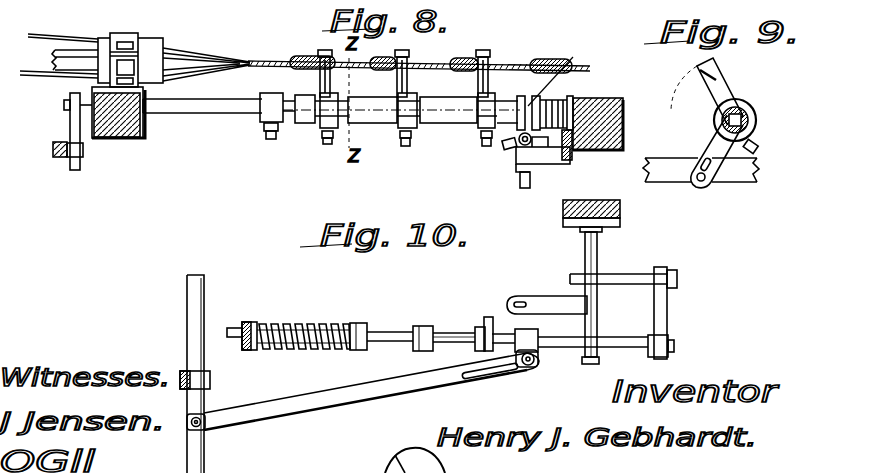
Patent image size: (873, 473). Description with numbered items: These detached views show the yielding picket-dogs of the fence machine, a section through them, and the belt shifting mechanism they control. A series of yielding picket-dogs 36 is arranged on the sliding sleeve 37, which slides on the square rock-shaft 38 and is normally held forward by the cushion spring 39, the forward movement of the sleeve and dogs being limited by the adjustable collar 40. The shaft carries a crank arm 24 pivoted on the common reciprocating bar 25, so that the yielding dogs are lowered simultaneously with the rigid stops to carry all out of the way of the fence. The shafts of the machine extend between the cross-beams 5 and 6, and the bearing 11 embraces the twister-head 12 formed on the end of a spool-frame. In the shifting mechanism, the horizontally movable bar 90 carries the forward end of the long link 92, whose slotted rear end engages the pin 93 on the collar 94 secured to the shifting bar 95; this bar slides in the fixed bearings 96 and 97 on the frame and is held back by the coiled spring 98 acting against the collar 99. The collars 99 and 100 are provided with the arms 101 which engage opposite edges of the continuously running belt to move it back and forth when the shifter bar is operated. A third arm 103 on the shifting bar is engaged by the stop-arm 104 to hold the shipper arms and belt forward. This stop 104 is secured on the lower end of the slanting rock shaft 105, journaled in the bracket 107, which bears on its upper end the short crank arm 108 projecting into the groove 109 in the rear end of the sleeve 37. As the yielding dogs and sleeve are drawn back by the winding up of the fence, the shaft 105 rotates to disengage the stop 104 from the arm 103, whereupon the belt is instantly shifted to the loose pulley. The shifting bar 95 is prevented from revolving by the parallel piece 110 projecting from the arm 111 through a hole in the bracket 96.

In FIG. 8, the cross-beam 5 is at (117, 140).
In FIG. 8, the cross-beam 6 is at (620, 151).
In FIG. 8, the bearing 11 is at (124, 34).
In FIG. 8, the twister-head 12 is at (152, 42).
In FIG. 8, the crank arm 24 is at (70, 122).
In FIG. 9, the crank arm 24 is at (722, 147).
In FIG. 8, the reciprocating bar 25 is at (53, 157).
In FIG. 8, the yielding picket-dog 36 is at (468, 60).
In FIG. 8, the sliding sleeve 37 is at (458, 124).
In FIG. 8, the square rock-shaft 38 is at (196, 107).
In FIG. 8, the cushion spring 39 is at (620, 98).
In FIG. 8, the adjustable collar 40 is at (270, 93).
In FIG. 10, the horizontally movable bar 90 is at (205, 460).
In FIG. 10, the long link 92 is at (410, 388).
In FIG. 10, the pin 93 is at (533, 367).
In FIG. 10, the collar 94 is at (370, 326).
In FIG. 10, the shifting bar 95 is at (540, 366).
In FIG. 10, the fixed bearing 96 is at (598, 327).
In FIG. 10, the fixed bearing 97 is at (246, 325).
In FIG. 10, the coiled spring 98 is at (328, 330).
In FIG. 10, the collar 99 is at (352, 330).
In FIG. 10, the collar 100 is at (440, 322).
In FIG. 10, the arm 101 is at (378, 334).
In FIG. 10, the third arm 103 is at (478, 333).
In FIG. 10, the stop-arm 104 is at (503, 299).
In FIG. 8, the slanting rock shaft 105 is at (525, 188).
In FIG. 8, the bracket 107 is at (563, 166).
In FIG. 8, the short crank arm 108 is at (519, 153).
In FIG. 8, the groove 109 is at (573, 57).
In FIG. 10, the parallel piece 110 is at (622, 277).
In FIG. 10, the arm 111 is at (668, 310).